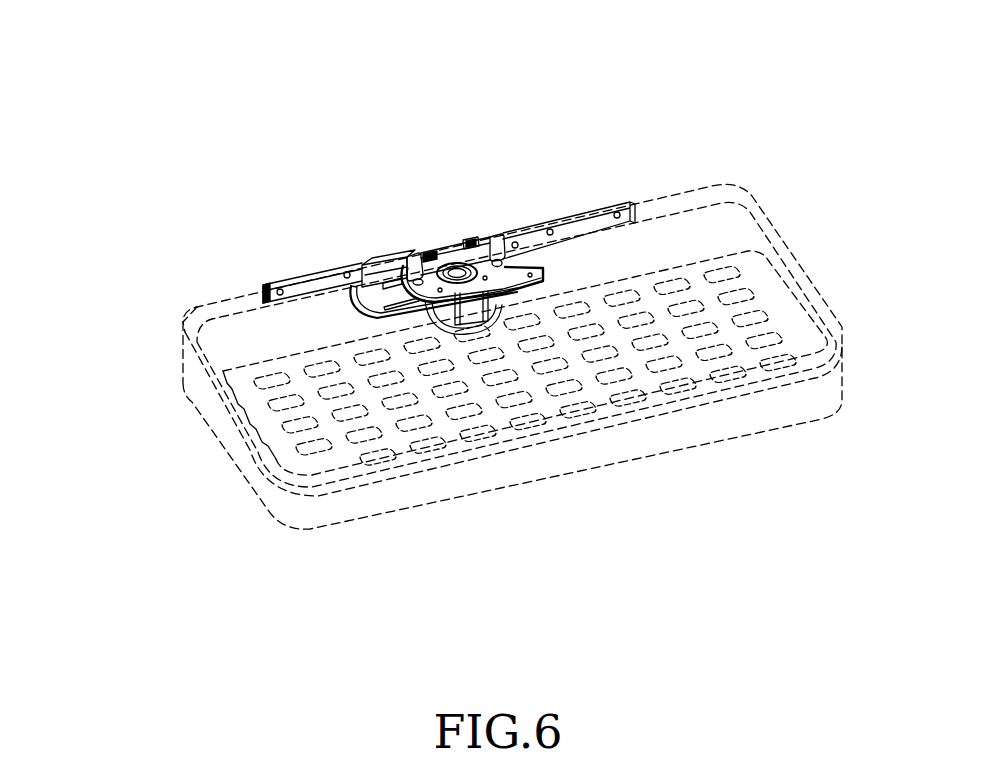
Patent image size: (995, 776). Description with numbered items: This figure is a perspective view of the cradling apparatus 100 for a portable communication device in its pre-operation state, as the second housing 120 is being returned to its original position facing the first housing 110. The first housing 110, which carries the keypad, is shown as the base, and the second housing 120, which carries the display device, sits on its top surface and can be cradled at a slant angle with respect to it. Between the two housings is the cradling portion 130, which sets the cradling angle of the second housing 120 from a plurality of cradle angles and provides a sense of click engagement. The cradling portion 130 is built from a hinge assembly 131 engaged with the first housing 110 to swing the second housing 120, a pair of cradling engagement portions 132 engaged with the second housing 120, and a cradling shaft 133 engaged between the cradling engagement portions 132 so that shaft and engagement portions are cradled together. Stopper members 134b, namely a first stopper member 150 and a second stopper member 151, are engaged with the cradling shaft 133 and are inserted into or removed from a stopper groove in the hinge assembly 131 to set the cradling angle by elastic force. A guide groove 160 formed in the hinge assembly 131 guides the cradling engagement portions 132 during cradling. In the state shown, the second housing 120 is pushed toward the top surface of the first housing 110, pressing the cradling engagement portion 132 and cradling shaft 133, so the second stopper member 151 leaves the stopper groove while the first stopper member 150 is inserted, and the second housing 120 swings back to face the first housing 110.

The cradling apparatus 100 is at (790, 75).
The first housing 110 is at (248, 453).
The second housing 120 is at (207, 310).
The cradling portion 130 is at (627, 32).
The hinge assembly 131 is at (528, 264).
The cradling engagement portions 132 is at (306, 282).
The cradling shaft 133 is at (452, 250).
The stopper members 134b is at (487, 122).
The first stopper member 150 is at (474, 240).
The second stopper member 151 is at (414, 252).
The guide groove 160 is at (353, 296).